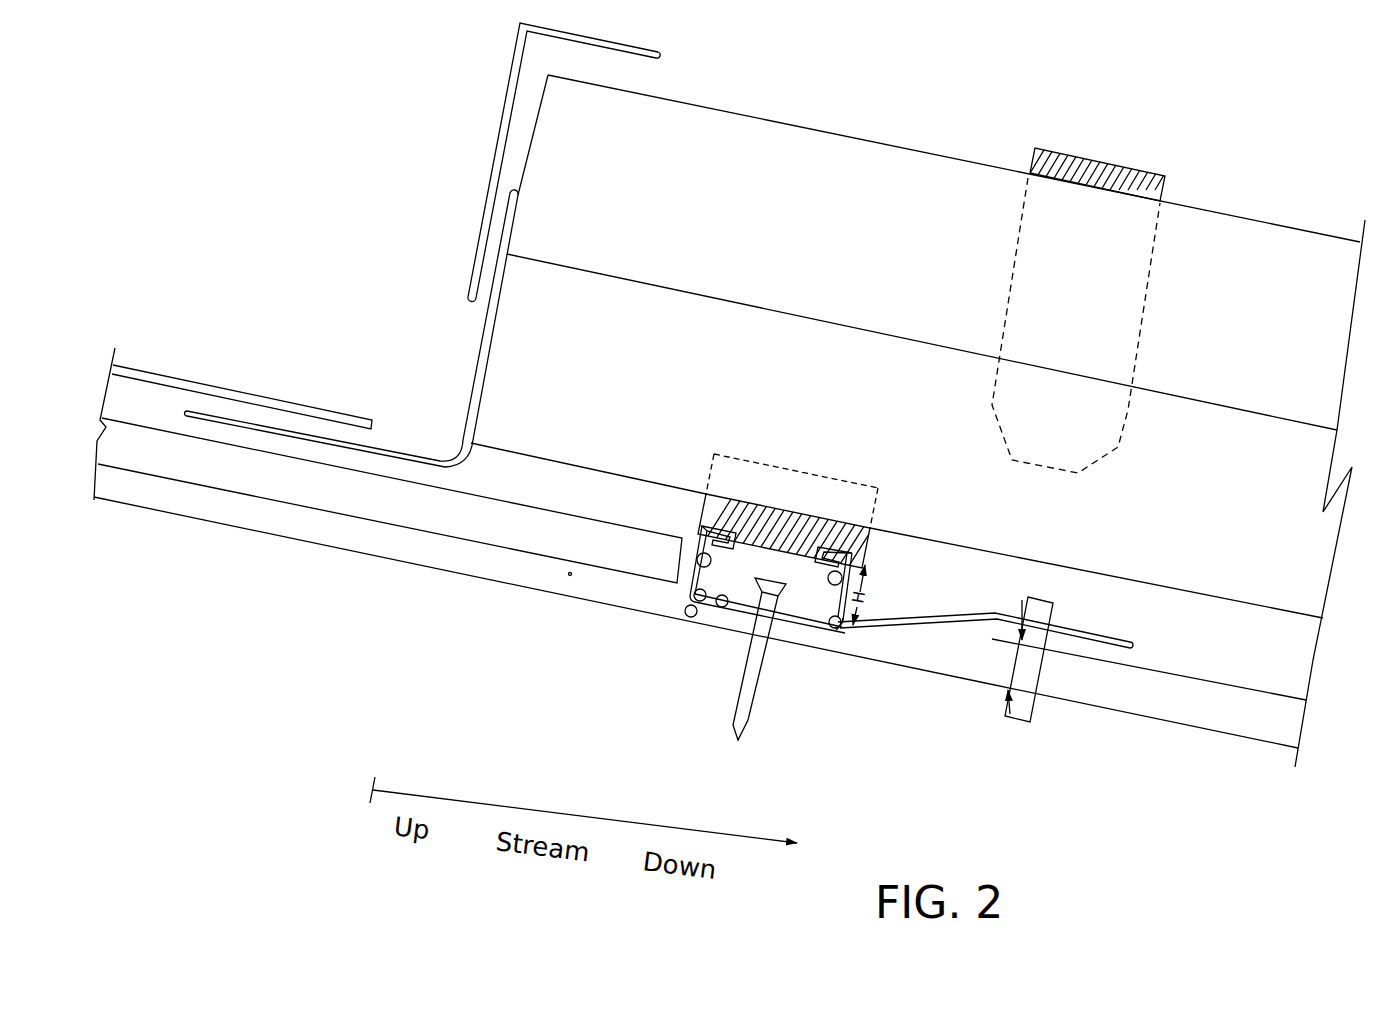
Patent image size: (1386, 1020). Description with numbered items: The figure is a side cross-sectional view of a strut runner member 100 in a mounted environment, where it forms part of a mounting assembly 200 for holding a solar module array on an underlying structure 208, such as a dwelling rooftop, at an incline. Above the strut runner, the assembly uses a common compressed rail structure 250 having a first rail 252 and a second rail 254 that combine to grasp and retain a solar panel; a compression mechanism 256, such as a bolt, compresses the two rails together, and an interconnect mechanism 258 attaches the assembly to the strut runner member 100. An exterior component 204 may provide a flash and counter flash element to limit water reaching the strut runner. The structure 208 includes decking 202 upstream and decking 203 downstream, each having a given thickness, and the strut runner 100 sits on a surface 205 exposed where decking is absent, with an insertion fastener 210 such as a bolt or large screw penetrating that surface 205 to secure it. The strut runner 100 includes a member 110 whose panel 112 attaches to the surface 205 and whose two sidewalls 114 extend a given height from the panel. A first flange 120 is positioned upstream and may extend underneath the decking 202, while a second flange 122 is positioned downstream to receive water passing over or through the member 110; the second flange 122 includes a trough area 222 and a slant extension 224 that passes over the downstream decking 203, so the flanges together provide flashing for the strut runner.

The strut runner member 100 is at (884, 576).
The member 110 is at (700, 613).
The panel 112 is at (712, 600).
The sidewall 114 is at (698, 538).
The first flange 120 is at (568, 575).
The second flange 122 is at (975, 638).
The mounting assembly 200 is at (380, 98).
The decking 202 is at (392, 503).
The decking 203 is at (1220, 713).
The exterior component 204 is at (490, 70).
The surface 205 is at (740, 625).
The underlying structure 208 is at (1065, 792).
The insertion fastener 210 is at (753, 662).
The trough area 222 is at (827, 628).
The slant extension 224 is at (942, 620).
The common compressed rail structure 250 is at (1323, 396).
The first rail 252 is at (1217, 228).
The second rail 254 is at (1213, 472).
The compression mechanism 256 is at (1073, 157).
The interconnect mechanism 258 is at (833, 522).